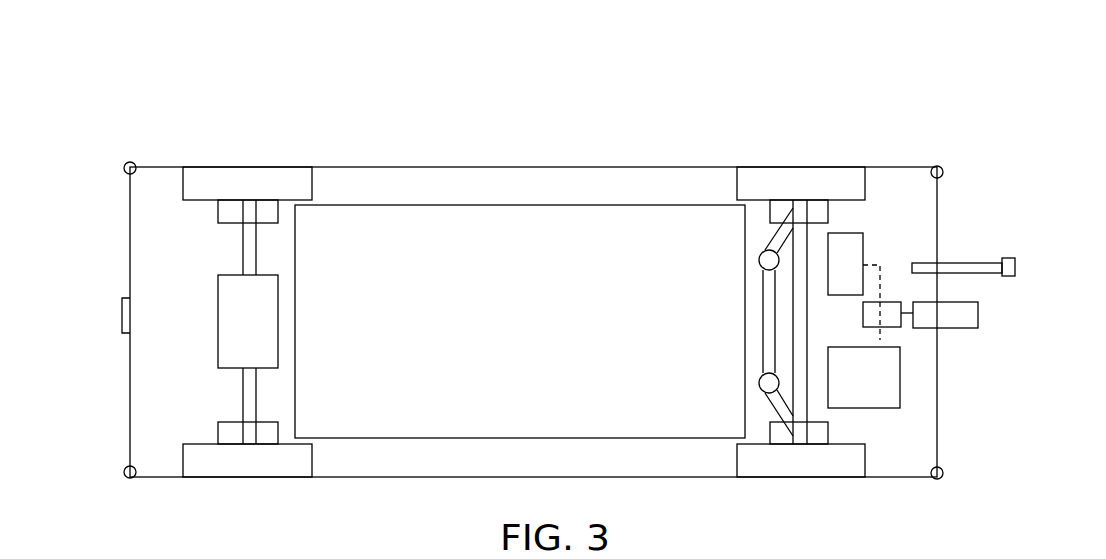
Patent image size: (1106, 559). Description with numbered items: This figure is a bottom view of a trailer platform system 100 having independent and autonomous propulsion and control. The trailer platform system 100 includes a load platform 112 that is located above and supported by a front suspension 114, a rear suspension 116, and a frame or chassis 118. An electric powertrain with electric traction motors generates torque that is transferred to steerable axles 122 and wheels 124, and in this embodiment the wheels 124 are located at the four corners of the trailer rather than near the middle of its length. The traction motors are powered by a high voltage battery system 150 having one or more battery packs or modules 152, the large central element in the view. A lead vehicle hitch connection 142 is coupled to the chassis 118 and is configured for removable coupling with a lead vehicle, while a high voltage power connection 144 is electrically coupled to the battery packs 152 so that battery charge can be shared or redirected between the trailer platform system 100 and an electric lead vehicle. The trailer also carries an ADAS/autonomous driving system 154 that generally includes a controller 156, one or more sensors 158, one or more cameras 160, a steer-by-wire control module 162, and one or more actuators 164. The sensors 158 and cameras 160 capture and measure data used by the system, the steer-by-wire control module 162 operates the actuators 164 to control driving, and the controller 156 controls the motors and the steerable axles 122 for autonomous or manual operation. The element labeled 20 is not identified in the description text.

The trailer platform system 100 is at (968, 110).
The load platform 112 is at (562, 152).
The front suspension 114 is at (822, 212).
The rear suspension 116 is at (227, 212).
The frame or chassis 118 is at (183, 348).
The steerable axle 122 is at (247, 390).
The wheel 124 is at (256, 182).
The lead vehicle hitch connection 142 is at (967, 318).
The high voltage power connection 144 is at (972, 262).
The high voltage battery system 150 is at (436, 184).
The battery pack or module 152 is at (526, 349).
The ADAS/autonomous driving system 154 is at (920, 364).
The controller 156 is at (878, 397).
The sensor 158 is at (130, 162).
The camera 160 is at (123, 313).
The steer-by-wire control module 162 is at (863, 247).
The actuator 164 is at (913, 313).
The component 20 is at (258, 337).